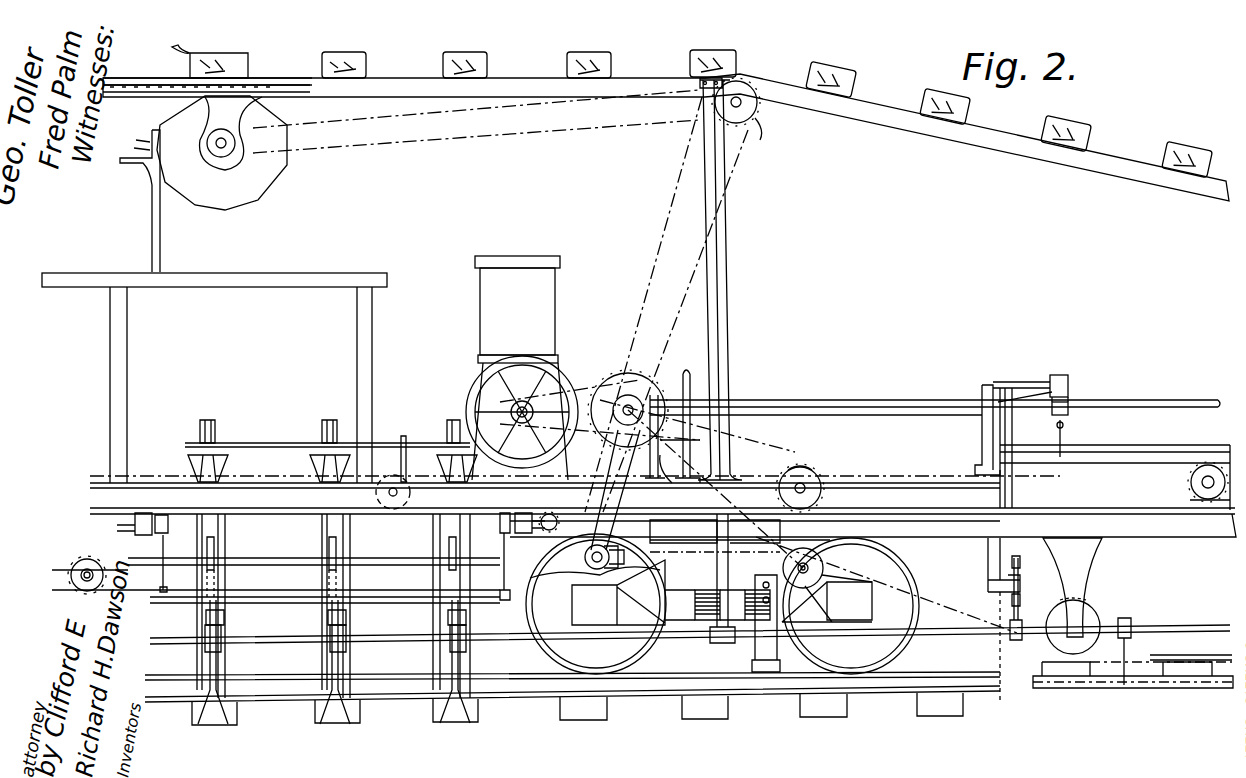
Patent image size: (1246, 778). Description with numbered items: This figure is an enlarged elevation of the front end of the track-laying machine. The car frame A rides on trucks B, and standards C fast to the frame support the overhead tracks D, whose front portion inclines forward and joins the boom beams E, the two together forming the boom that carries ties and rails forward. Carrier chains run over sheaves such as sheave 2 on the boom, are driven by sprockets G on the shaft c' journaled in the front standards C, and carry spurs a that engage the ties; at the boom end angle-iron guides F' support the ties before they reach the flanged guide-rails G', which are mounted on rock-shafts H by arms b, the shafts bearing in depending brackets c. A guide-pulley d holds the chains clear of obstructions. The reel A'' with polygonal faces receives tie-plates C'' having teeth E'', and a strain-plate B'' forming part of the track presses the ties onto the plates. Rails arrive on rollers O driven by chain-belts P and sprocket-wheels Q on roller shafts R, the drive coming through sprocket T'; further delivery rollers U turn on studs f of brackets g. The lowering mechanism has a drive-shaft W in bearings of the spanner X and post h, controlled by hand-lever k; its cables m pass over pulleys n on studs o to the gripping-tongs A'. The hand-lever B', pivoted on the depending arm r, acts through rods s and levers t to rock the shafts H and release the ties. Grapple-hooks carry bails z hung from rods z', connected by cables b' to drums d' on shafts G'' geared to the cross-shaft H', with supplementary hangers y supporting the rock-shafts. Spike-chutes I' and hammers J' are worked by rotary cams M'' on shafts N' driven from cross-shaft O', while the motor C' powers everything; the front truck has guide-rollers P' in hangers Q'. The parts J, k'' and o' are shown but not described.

The overhead track D is at (396, 78).
The angle-iron guide F' is at (207, 66).
The grapple-hook B'' is at (217, 51).
The spur a is at (212, 62).
The reel A'' is at (222, 153).
The tie-plate C'' is at (217, 131).
The projecting teeth E'' is at (134, 201).
The shaft G'' is at (545, 487).
The car frame A is at (662, 497).
The beam E is at (873, 522).
The motor C' is at (520, 368).
The cross-shaft H' is at (522, 430).
The crank wheel J is at (628, 445).
The hand-lever k is at (690, 416).
The bearing post h is at (680, 461).
The standard C is at (727, 279).
The shaft c' is at (739, 86).
The sprocket G is at (773, 136).
The hammer J' is at (330, 411).
The bar k'' is at (327, 434).
The spike-chute I' is at (341, 544).
The roller O is at (402, 447).
The sprocket-wheel Q is at (387, 463).
The chain-belt P is at (415, 464).
The roller shaft R is at (390, 490).
The sprocket-wheel T' is at (808, 451).
The drum d' is at (331, 509).
The cable b' is at (335, 565).
The guide-pulley d is at (470, 575).
The shaft N' is at (276, 558).
The rotary cam M'' is at (331, 548).
The rod z' is at (325, 609).
The rock-shaft H is at (690, 620).
The bail z is at (668, 526).
The truck B is at (722, 597).
The cross-shaft O' is at (612, 540).
The eccentric o' is at (564, 522).
The supplementary hanger y is at (720, 525).
The hanger Q' is at (753, 623).
The guide-roller P' is at (760, 703).
The drive-shaft W is at (855, 395).
The spanner X is at (980, 432).
The hand-lever B' is at (1026, 448).
The stud o is at (1022, 379).
The cable m is at (1058, 375).
The pulley n is at (1068, 388).
The gripping-tongs A' is at (1115, 439).
The rail delivery roller U is at (1188, 460).
The stud f is at (1190, 486).
The bracket g is at (1208, 512).
The depending arm r is at (988, 560).
The rod s is at (1020, 558).
The lever t is at (1010, 608).
The depending bracket c is at (1072, 587).
The sheave 2 is at (1090, 616).
The arm b is at (1135, 659).
The flanged guide-rail G' is at (1133, 669).